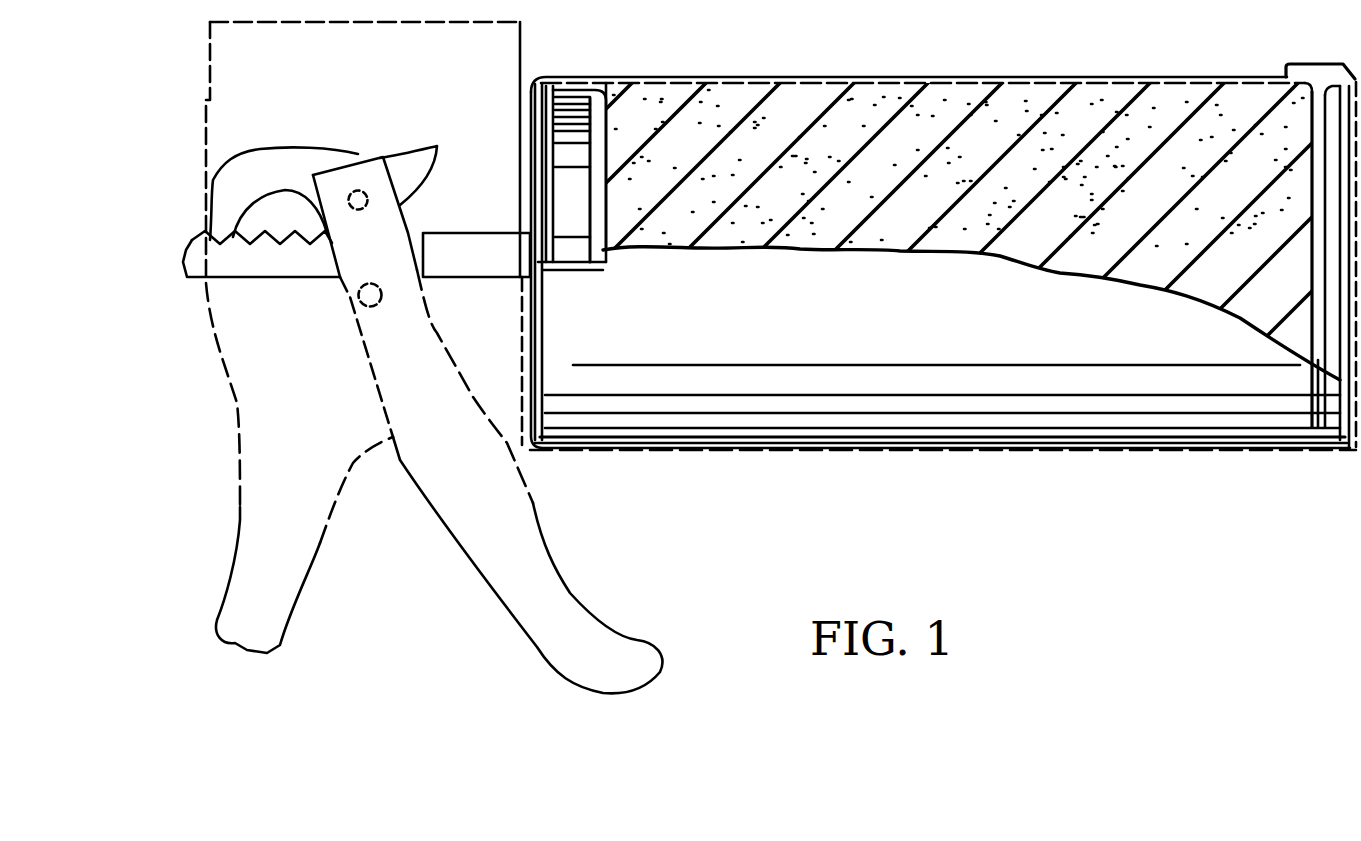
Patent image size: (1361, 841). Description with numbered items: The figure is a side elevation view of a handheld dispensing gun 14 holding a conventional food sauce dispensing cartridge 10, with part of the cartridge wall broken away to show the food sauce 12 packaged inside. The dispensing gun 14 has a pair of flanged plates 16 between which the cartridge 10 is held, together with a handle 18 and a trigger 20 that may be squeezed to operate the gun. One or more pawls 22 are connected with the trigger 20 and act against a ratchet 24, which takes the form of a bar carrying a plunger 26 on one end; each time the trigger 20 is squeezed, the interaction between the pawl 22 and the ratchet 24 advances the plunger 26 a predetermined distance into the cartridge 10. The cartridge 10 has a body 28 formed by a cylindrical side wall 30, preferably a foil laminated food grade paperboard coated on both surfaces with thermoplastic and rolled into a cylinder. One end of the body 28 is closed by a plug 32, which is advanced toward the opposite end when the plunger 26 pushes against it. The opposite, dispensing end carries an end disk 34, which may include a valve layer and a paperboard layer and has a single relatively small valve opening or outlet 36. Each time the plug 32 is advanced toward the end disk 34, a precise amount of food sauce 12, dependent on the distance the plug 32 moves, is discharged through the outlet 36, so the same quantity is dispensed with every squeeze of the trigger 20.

The food sauce dispensing cartridge 10 is at (964, 58).
The food sauce 12 is at (772, 118).
The handheld dispensing gun 14 is at (172, 91).
The flanged plates 16 is at (572, 453).
The handle 18 is at (280, 497).
The trigger 20 is at (525, 585).
The pawl 22 is at (250, 183).
The ratchet 24 is at (286, 247).
The plunger 26 is at (556, 133).
The cartridge body 28 is at (1053, 80).
The cylindrical side wall 30 is at (1094, 318).
The plug 32 is at (606, 187).
The end disk 34 is at (1311, 140).
The valve opening or outlet 36 is at (1311, 222).